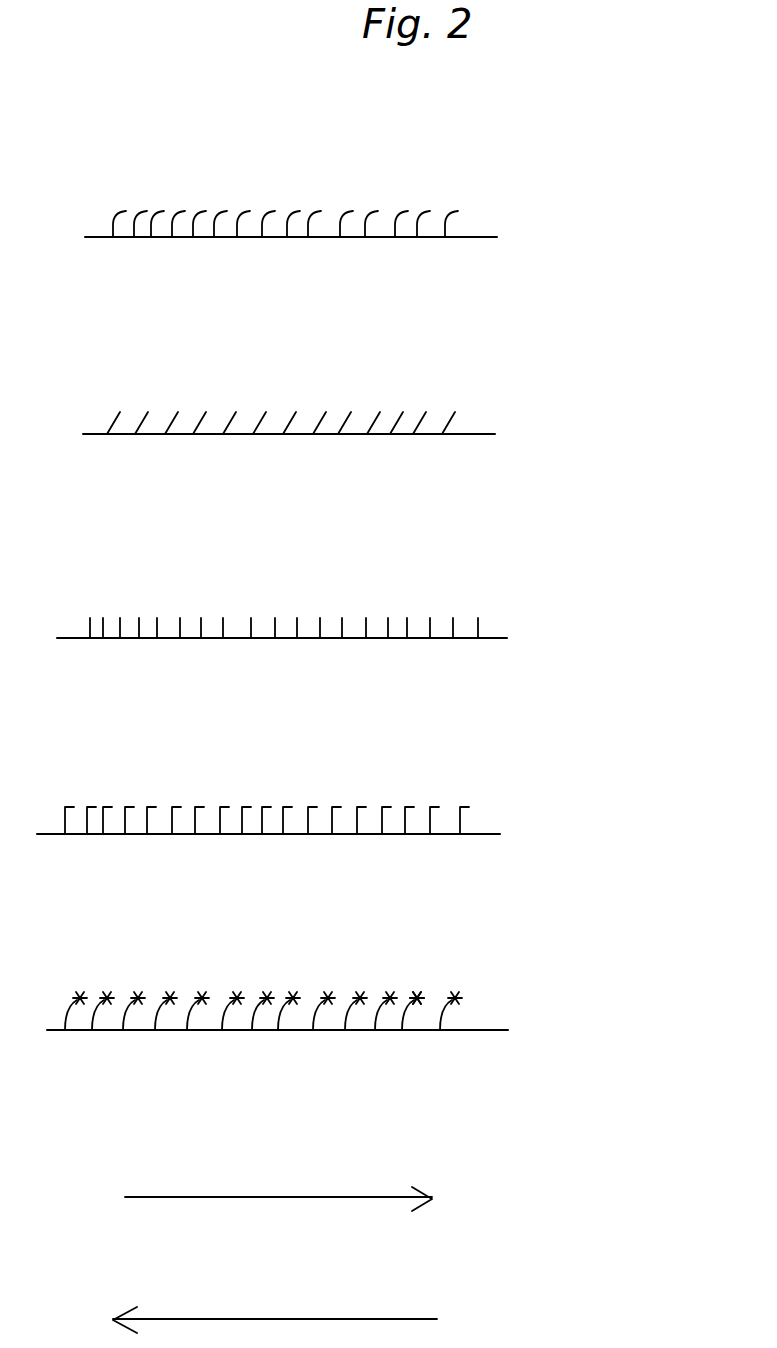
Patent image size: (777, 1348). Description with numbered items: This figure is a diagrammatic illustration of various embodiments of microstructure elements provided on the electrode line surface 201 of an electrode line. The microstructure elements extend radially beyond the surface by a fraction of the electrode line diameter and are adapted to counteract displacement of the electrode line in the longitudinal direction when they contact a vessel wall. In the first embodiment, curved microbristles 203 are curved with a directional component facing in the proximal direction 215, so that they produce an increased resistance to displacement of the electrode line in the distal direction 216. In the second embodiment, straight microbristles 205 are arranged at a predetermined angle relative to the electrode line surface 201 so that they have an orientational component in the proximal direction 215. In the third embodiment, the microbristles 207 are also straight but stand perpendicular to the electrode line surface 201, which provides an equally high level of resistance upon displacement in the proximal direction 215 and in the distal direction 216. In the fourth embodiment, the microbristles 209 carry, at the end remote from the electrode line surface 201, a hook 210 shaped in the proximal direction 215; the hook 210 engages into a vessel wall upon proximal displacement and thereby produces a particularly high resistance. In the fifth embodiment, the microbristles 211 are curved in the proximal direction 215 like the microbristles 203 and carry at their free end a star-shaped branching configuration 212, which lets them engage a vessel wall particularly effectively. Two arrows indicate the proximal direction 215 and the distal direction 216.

The electrode line surface 201 is at (467, 239).
The curved microbristles 203 is at (397, 213).
The straight microbristles 205 is at (403, 414).
The perpendicular microbristles 207 is at (428, 628).
The hooked microbristles 209 is at (398, 805).
The hook 210 is at (432, 805).
The curved microbristles with star-shaped branching 211 is at (372, 1013).
The star-shaped branching configuration 212 is at (430, 1005).
The proximal direction 215 is at (255, 1196).
The distal direction 216 is at (255, 1318).